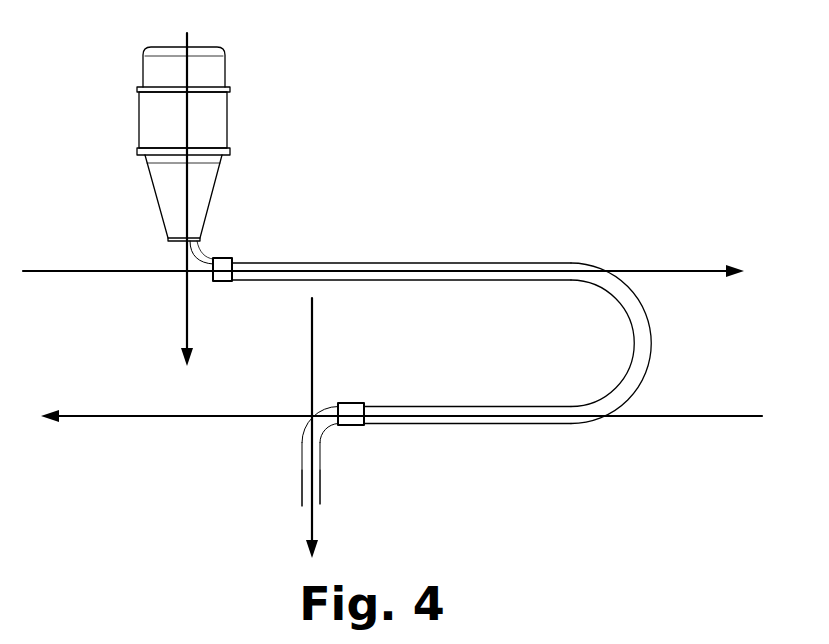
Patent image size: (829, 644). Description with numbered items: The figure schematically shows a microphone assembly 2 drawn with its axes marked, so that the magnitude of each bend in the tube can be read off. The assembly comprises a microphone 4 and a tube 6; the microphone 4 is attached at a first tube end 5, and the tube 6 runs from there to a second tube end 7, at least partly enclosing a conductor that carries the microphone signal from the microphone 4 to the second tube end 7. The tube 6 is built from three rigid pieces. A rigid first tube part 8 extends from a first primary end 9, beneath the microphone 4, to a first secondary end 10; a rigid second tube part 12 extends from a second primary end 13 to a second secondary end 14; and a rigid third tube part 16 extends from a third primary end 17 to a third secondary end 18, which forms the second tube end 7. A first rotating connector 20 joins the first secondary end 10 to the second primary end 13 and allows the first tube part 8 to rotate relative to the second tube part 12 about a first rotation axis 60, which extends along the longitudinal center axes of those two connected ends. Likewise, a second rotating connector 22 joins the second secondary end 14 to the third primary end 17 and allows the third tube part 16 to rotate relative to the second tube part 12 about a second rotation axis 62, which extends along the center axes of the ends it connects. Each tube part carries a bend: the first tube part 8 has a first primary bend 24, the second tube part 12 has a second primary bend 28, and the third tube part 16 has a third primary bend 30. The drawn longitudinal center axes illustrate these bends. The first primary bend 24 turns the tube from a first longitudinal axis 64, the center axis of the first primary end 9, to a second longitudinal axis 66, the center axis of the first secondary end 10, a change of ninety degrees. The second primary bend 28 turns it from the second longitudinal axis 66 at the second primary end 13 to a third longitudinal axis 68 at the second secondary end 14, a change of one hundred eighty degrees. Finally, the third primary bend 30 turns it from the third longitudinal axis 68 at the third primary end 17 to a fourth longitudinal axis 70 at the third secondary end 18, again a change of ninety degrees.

The microphone assembly 2 is at (698, 107).
The microphone 4 is at (230, 125).
The first tube end 5 is at (134, 225).
The first primary end 9 is at (187, 270).
The first tube part 8 is at (183, 266).
The tube 6 is at (322, 265).
The second tube end 7 is at (357, 510).
The first secondary end 10 is at (272, 223).
The second primary end 13 is at (272, 223).
The first rotating connector 20 is at (218, 258).
The second tube part 12 is at (480, 308).
The second secondary end 14 is at (371, 456).
The third tube part 16 is at (300, 452).
The third primary end 17 is at (371, 456).
The third secondary end 18 is at (320, 503).
The second rotating connector 22 is at (347, 425).
The first primary bend 24 is at (202, 275).
The second primary bend 28 is at (648, 312).
The third primary bend 30 is at (338, 403).
The first rotation axis 60 is at (383, 301).
The second rotation axis 62 is at (401, 445).
The first longitudinal axis 64 is at (181, 333).
The second longitudinal axis 66 is at (120, 273).
The third longitudinal axis 68 is at (202, 418).
The fourth longitudinal axis 70 is at (313, 340).